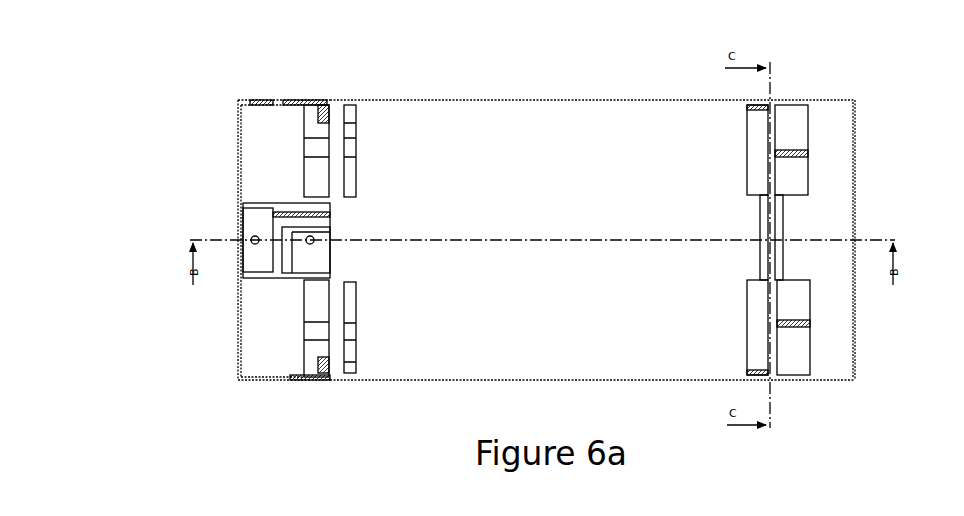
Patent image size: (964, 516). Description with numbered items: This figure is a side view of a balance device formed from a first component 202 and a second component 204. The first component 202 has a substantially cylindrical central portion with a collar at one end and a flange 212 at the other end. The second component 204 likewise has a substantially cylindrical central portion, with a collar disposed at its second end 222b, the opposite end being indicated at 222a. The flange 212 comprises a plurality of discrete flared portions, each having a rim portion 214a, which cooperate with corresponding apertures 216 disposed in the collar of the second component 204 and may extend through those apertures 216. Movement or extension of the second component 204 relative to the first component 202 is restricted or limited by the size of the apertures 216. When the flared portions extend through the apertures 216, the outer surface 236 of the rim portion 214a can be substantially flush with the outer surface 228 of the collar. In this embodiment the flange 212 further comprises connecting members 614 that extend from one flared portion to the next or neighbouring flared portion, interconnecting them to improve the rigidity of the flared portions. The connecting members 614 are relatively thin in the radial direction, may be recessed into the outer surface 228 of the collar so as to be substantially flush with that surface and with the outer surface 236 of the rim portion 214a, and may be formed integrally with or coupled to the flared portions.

The first component 202 is at (232, 120).
The second component 204 is at (535, 96).
The flange 212 is at (770, 143).
The rim portion 214a is at (763, 105).
The apertures 216 is at (797, 340).
The first end plate 222a is at (345, 104).
The second end 222b is at (855, 158).
The outer surface 228 is at (825, 305).
The outer surface 236 is at (755, 338).
The connecting members 614 is at (778, 252).